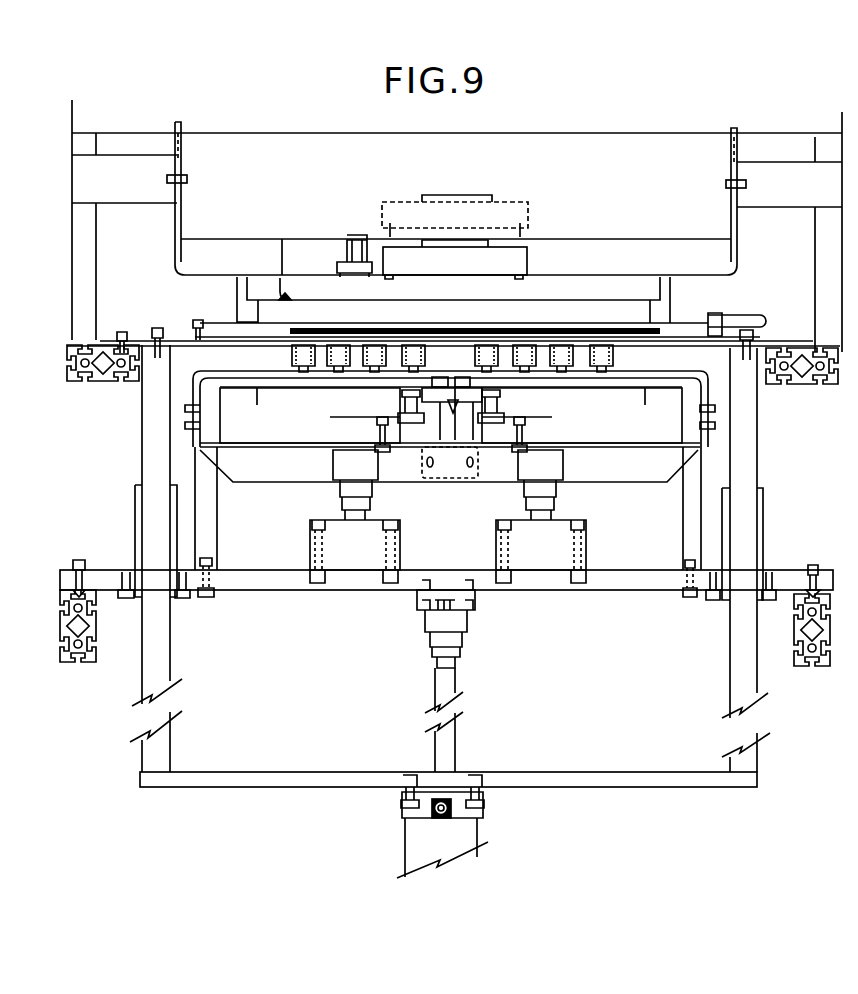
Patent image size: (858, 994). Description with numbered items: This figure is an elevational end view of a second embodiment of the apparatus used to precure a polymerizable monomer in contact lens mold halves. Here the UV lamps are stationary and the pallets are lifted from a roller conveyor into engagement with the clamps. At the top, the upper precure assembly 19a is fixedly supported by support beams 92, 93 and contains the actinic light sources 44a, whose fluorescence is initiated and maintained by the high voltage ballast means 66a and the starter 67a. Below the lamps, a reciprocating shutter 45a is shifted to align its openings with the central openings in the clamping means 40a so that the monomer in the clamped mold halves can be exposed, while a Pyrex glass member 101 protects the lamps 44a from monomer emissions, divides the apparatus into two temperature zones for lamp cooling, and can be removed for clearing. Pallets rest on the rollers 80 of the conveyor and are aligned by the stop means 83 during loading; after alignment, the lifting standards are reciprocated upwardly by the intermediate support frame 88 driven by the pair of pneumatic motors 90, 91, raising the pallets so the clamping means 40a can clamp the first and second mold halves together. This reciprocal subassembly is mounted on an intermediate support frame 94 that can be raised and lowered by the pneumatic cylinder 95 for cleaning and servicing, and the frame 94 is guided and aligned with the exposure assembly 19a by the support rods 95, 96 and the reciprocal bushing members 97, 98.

The upper precure assembly 19a is at (278, 191).
The high voltage ballast means 66a is at (478, 231).
The starter 67a is at (355, 235).
The actinic light source 44a is at (543, 313).
The reciprocating shutter 45a is at (590, 330).
The Pyrex glass member 101 is at (680, 330).
The clamping means 40a is at (290, 353).
The rollers 80 is at (277, 395).
The intermediate support frame 88 is at (263, 476).
The stop means 83 is at (327, 407).
The pneumatic motor 91 is at (340, 500).
The pneumatic motor 90 is at (570, 500).
The support beam 92 is at (103, 370).
The support beam 93 is at (802, 380).
The intermediate support frame 94 is at (615, 578).
The pneumatic cylinder / support rod 95 is at (160, 633).
The support rod 96 is at (742, 645).
The reciprocal bushing member 97 is at (760, 507).
The reciprocal bushing member 98 is at (135, 500).